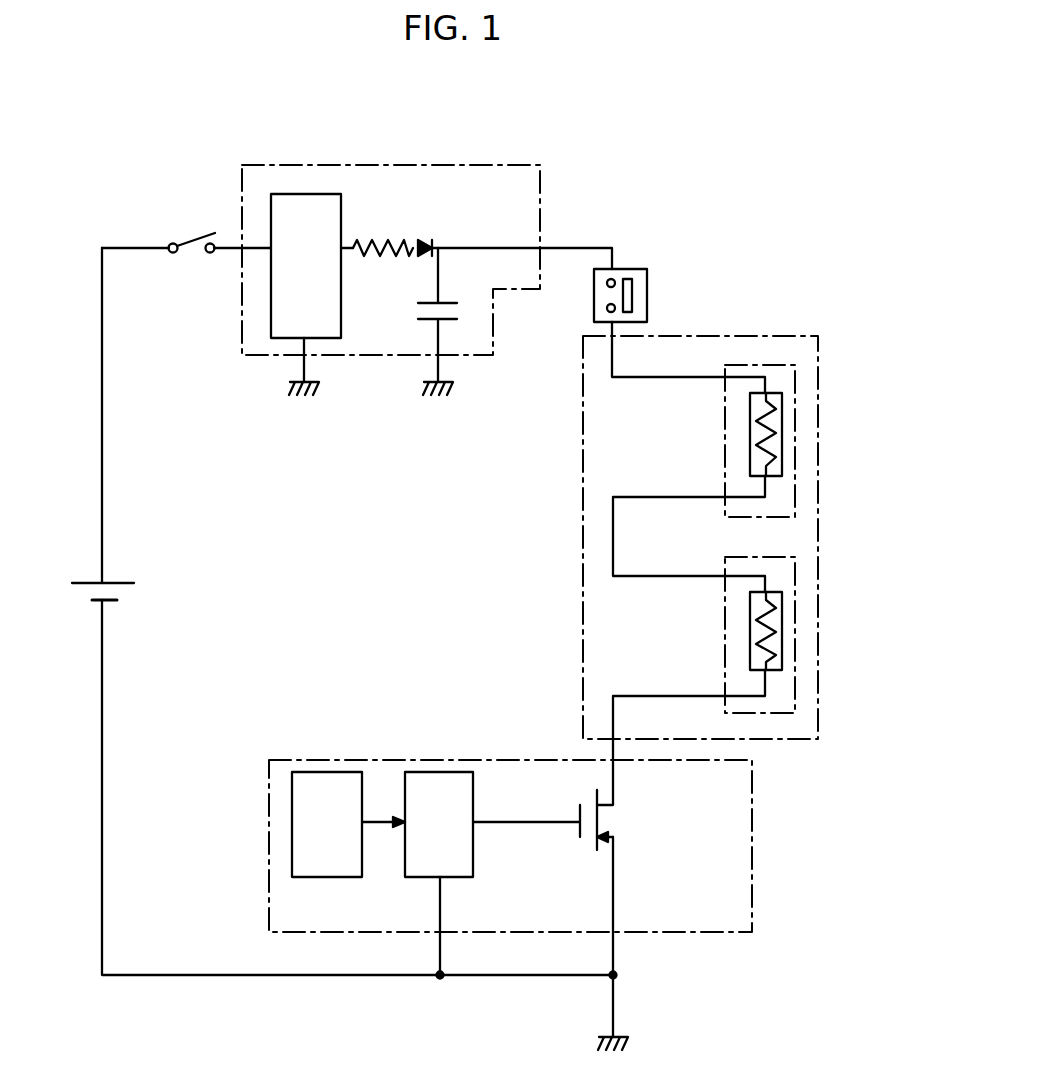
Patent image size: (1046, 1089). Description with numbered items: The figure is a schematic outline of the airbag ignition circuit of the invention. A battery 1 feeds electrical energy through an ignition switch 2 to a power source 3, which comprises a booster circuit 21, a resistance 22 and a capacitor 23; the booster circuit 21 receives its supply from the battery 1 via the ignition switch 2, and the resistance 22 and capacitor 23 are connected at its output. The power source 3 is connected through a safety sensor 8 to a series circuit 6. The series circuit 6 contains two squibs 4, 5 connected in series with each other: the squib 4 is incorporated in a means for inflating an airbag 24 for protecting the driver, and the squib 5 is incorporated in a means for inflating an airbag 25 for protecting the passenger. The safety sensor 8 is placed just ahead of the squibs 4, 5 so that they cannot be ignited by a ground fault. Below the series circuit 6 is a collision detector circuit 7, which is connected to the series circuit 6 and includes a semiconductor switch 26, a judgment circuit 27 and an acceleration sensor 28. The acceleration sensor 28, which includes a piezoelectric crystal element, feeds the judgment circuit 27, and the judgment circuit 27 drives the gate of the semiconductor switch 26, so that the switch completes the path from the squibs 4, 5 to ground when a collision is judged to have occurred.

The battery 1 is at (80, 578).
The ignition switch 2 is at (190, 238).
The power source 3 is at (478, 165).
The booster circuit 21 is at (298, 194).
The resistance 22 is at (398, 246).
The capacitor 23 is at (423, 301).
The safety sensor 8 is at (648, 286).
The series circuit 6 is at (766, 336).
The means for inflating an airbag 24 is at (795, 380).
The squib 4 is at (783, 441).
The means for inflating an airbag 25 is at (797, 577).
The squib 5 is at (783, 646).
The collision detector circuit 7 is at (752, 830).
The semiconductor switch 26 is at (622, 822).
The judgment circuit 27 is at (462, 877).
The acceleration sensor 28 is at (352, 877).